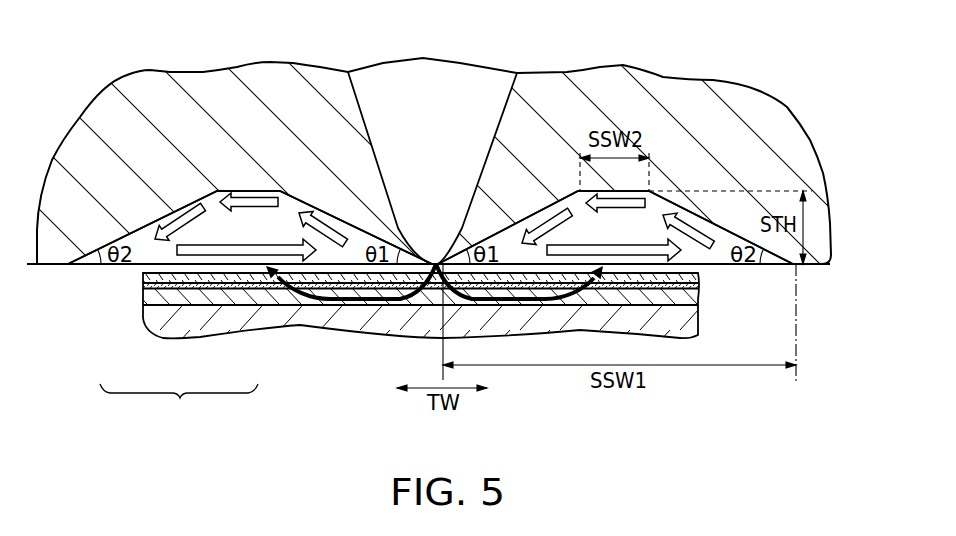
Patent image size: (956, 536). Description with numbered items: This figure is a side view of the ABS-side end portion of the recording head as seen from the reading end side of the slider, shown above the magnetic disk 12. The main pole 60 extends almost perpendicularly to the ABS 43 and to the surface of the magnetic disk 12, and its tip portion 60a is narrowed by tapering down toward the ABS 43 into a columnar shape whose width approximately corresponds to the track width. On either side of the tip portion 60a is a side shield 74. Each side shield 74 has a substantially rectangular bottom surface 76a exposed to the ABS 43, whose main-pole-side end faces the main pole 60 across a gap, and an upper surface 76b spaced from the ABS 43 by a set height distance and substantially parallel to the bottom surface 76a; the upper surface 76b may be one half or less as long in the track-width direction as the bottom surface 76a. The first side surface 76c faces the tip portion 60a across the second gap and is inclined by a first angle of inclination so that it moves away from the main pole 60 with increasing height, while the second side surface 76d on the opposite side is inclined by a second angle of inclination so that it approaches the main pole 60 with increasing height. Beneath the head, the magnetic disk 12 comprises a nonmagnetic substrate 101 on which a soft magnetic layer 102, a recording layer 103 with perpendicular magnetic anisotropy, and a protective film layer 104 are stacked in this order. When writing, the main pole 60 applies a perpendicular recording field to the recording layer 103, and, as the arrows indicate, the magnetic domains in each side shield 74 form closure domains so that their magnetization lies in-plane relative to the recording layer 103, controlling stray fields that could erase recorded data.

The main pole 60 is at (423, 60).
The tip portion 60a is at (386, 159).
The side shield 74 is at (214, 191).
The bottom surface 76a is at (728, 267).
The upper surface 76b is at (250, 190).
The first side surface 76c is at (331, 215).
The second side surface 76d is at (149, 223).
The air bearing surface 43 is at (53, 266).
The magnetic disk 12 is at (399, 351).
The substrate 101 is at (242, 320).
The soft magnetic layer 102 is at (220, 299).
The recording layer 103 is at (187, 286).
The protective film layer 104 is at (147, 279).